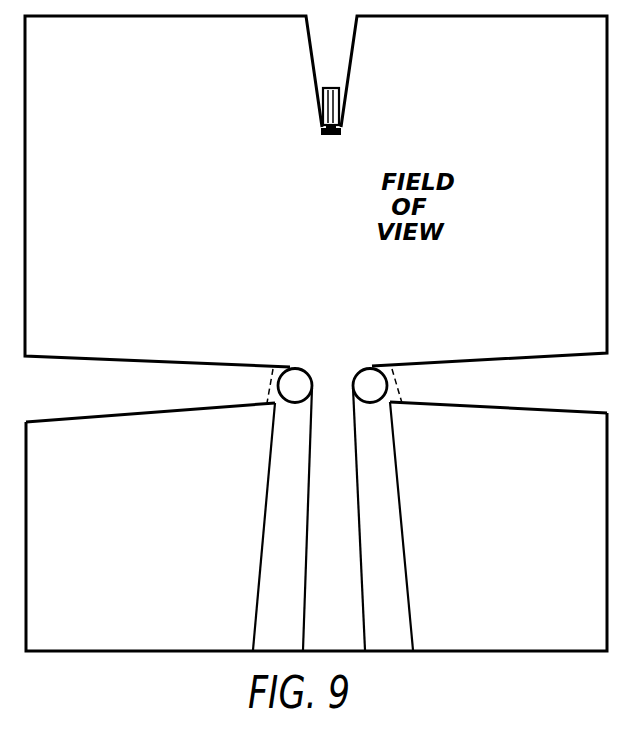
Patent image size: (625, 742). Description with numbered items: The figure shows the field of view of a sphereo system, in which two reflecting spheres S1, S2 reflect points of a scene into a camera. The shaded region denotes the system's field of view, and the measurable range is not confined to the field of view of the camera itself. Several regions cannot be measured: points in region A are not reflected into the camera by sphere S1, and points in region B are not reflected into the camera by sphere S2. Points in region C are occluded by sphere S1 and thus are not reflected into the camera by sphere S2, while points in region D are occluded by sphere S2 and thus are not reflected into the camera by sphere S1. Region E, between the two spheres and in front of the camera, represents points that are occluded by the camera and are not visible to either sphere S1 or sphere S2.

The region A is at (282, 519).
The region B is at (383, 519).
The region C is at (150, 395).
The region D is at (498, 391).
The region E is at (331, 87).
The sphere S1 is at (295, 386).
The sphere S2 is at (370, 386).